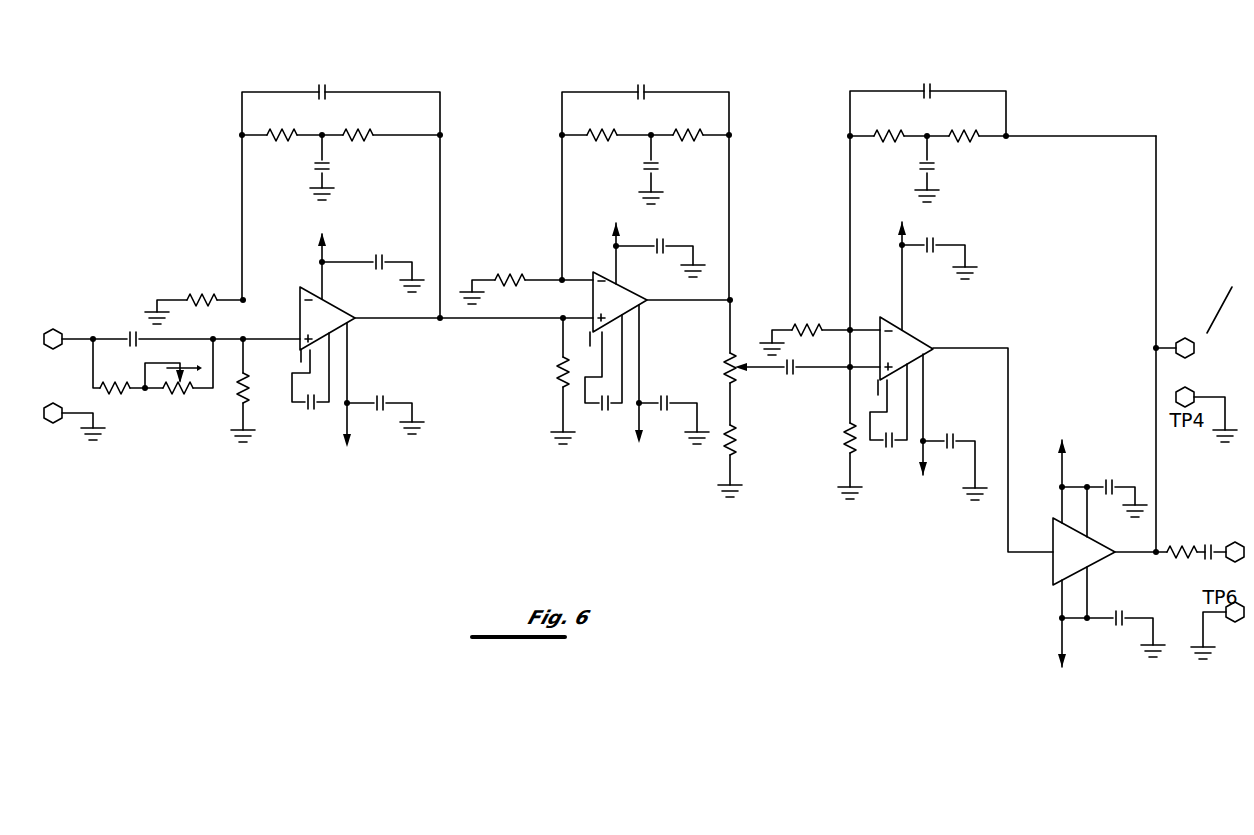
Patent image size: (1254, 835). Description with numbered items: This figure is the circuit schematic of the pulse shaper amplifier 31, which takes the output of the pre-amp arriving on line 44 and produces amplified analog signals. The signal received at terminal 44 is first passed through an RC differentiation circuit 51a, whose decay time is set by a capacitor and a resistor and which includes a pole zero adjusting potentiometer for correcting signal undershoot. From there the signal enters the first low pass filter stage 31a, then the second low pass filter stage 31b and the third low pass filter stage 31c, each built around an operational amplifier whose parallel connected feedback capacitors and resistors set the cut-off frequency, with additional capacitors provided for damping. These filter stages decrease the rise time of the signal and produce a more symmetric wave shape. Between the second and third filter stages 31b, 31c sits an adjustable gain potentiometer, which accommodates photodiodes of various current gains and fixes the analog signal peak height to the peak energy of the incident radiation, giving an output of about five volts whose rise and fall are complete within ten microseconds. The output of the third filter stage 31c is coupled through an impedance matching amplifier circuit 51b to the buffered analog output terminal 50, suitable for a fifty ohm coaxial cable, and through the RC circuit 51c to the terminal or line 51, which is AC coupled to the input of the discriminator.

The pulse shaper amplifier 31 is at (184, 98).
The first low pass filter stage 31a is at (302, 484).
The second low pass filter stage 31b is at (576, 482).
The third low pass filter stage 31c is at (885, 510).
The line 44 is at (62, 333).
The analog output terminal 50 is at (1188, 338).
The terminal or line 51 is at (1238, 541).
The RC differentiation circuit 51a is at (73, 361).
The impedance matching amplifier circuit 51b is at (1035, 573).
The RC circuit 51c is at (1181, 536).